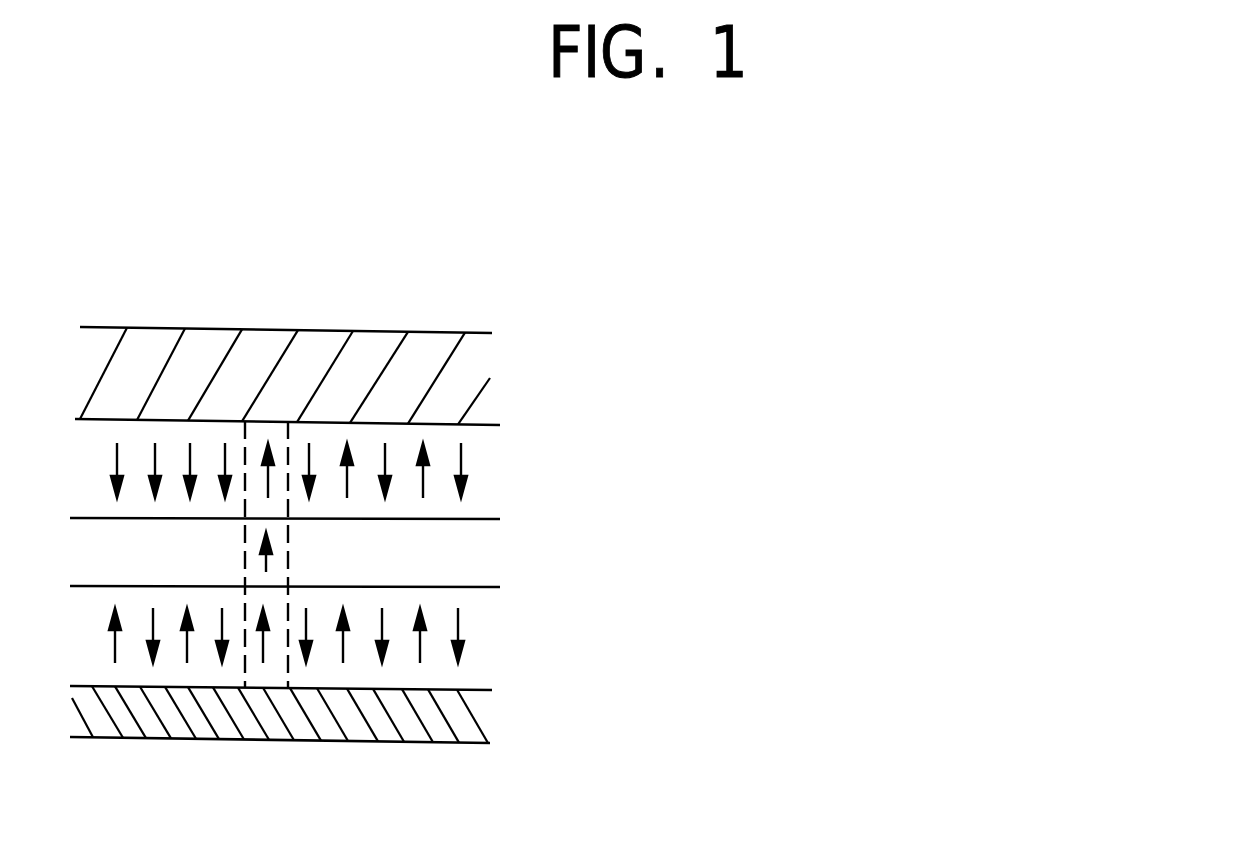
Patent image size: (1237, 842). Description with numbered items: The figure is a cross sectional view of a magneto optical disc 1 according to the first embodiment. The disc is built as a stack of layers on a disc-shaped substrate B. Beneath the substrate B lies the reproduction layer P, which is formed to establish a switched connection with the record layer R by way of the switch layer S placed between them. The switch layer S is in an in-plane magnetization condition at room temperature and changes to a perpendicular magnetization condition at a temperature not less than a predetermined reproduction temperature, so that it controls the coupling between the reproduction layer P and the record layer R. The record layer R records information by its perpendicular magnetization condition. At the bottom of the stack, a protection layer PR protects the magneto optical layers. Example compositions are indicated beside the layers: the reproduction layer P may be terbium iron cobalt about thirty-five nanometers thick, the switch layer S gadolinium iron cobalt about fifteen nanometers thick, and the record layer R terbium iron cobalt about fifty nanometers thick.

The magneto optical disc 1 is at (357, 329).
The substrate B is at (513, 338).
The reproduction layer P is at (513, 433).
The switch layer S is at (515, 530).
The record layer R is at (515, 600).
The protection layer PR is at (506, 690).